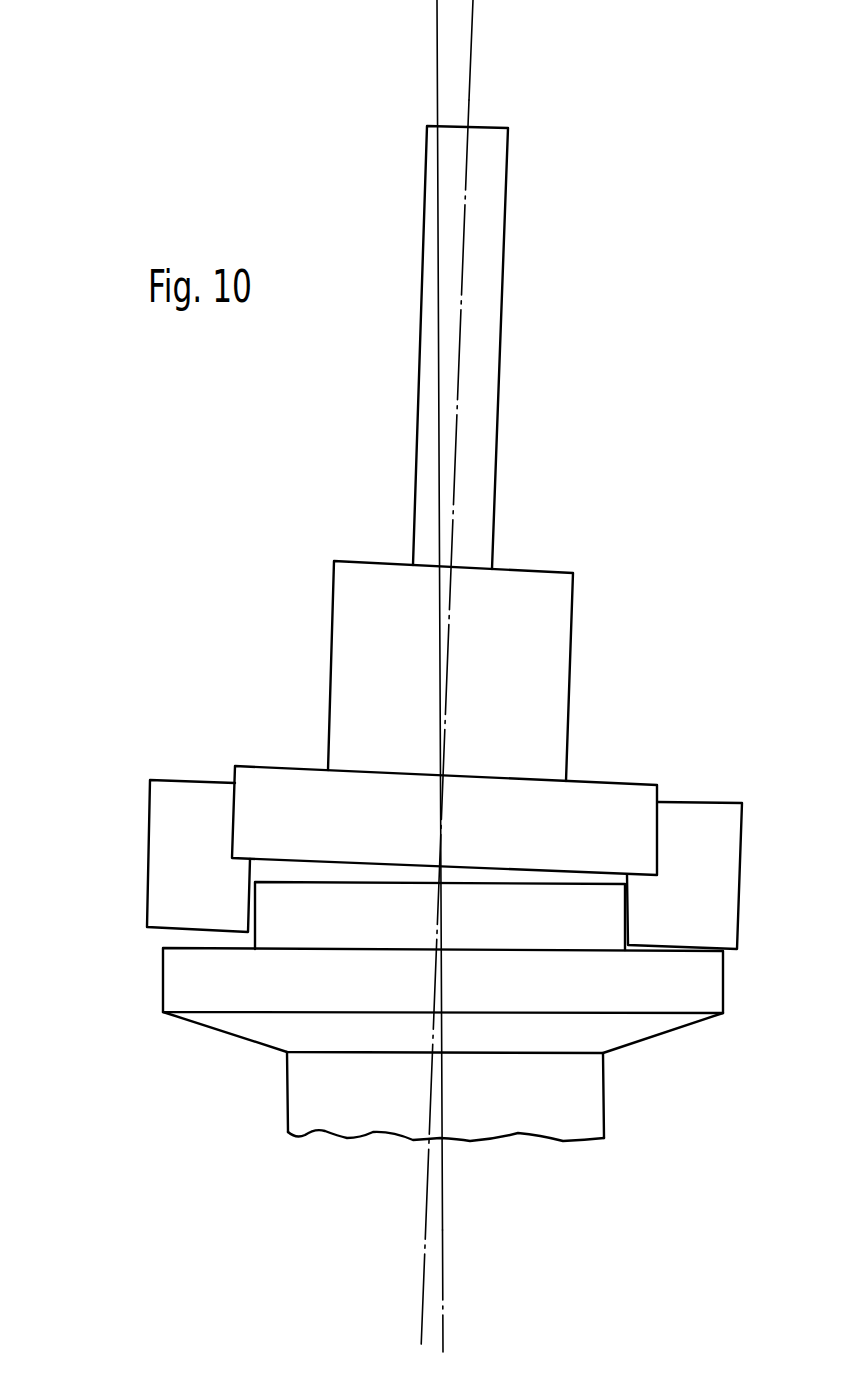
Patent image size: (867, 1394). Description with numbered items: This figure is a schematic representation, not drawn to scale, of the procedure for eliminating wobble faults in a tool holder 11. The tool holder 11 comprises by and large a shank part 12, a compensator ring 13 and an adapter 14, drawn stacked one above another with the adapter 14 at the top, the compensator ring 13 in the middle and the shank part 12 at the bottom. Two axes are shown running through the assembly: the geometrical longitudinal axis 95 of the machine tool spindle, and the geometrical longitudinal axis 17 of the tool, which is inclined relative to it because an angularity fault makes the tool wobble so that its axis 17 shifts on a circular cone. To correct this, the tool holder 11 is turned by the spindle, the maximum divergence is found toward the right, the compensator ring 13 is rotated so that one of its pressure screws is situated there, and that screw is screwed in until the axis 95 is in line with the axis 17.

The tool holder 11 is at (715, 512).
The shank part 12 is at (233, 1085).
The compensator ring 13 is at (140, 835).
The adapter 14 is at (325, 583).
The geometrical longitudinal axis 17 is at (471, 56).
The geometrical longitudinal axis of the machine tool spindle 95 is at (437, 52).